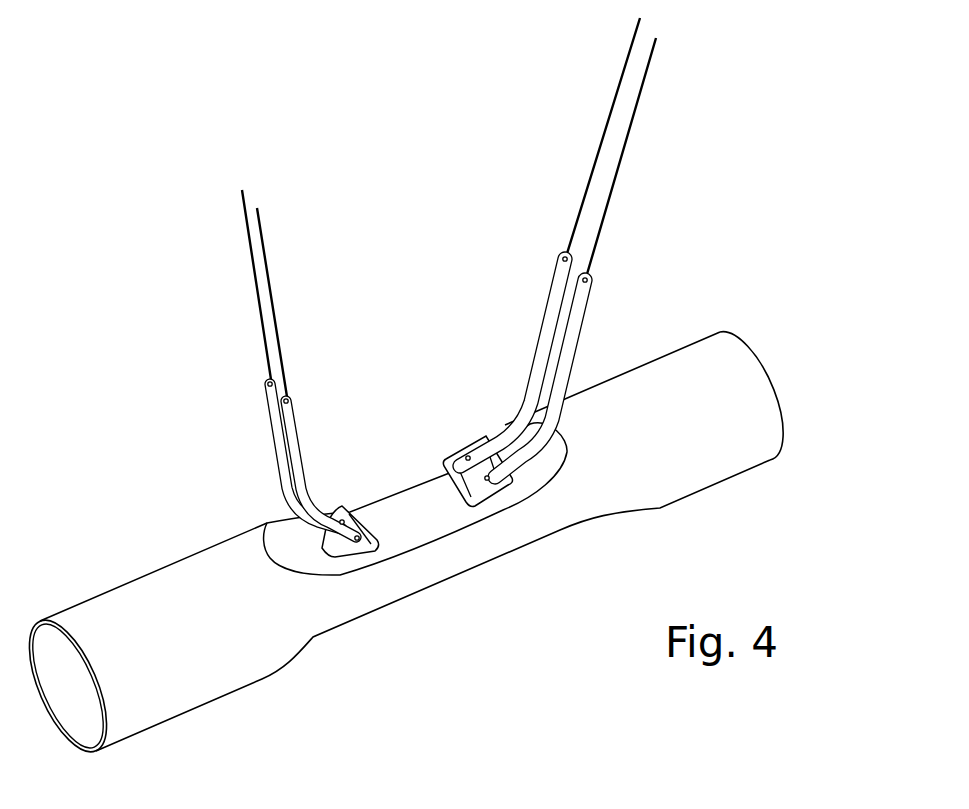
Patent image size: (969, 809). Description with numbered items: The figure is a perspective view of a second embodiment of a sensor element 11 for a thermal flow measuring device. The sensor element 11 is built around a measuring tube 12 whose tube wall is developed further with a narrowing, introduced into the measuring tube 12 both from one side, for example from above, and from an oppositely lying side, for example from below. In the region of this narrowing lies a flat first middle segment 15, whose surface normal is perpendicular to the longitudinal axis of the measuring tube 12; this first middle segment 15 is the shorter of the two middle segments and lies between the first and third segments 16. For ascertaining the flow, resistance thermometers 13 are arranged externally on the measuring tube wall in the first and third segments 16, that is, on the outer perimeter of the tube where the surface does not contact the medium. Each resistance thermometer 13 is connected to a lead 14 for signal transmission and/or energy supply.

The sensor element 11 is at (462, 279).
The measuring tube 12 is at (737, 370).
The resistance thermometer 13 is at (322, 552).
The lead for signal transmission and/or energy supply 14 is at (584, 291).
The first middle segment 15 is at (425, 541).
The first and/or third segment 16 is at (353, 562).